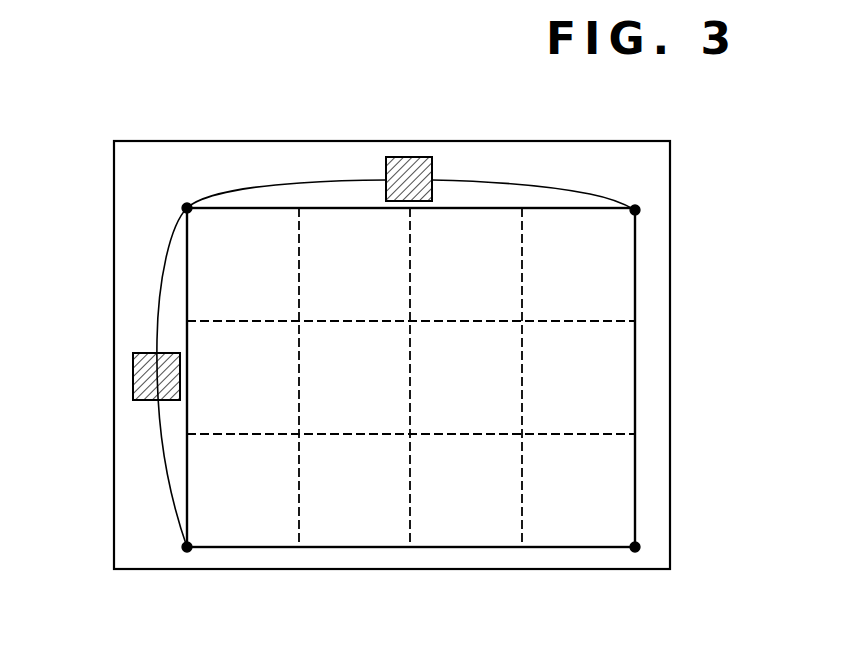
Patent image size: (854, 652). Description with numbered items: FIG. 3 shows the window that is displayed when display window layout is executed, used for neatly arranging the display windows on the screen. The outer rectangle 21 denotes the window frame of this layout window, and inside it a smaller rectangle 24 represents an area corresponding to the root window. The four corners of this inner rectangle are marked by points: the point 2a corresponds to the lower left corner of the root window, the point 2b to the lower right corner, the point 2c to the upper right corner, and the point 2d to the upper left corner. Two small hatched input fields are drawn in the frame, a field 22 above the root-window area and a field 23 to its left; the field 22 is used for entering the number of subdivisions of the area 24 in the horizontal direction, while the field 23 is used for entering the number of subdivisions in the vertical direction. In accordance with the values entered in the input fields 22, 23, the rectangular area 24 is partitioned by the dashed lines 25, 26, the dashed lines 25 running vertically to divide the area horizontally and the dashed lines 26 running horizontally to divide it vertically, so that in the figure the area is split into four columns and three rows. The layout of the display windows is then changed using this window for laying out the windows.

The rectangle (window frame) 21 is at (148, 141).
The input field 22 is at (410, 157).
The input field 23 is at (133, 378).
The rectangular area 24 is at (635, 493).
The dashed lines 25 is at (522, 518).
The dashed lines 26 is at (593, 323).
The point 2a is at (187, 547).
The point 2b is at (635, 550).
The point 2c is at (635, 210).
The point 2d is at (188, 200).